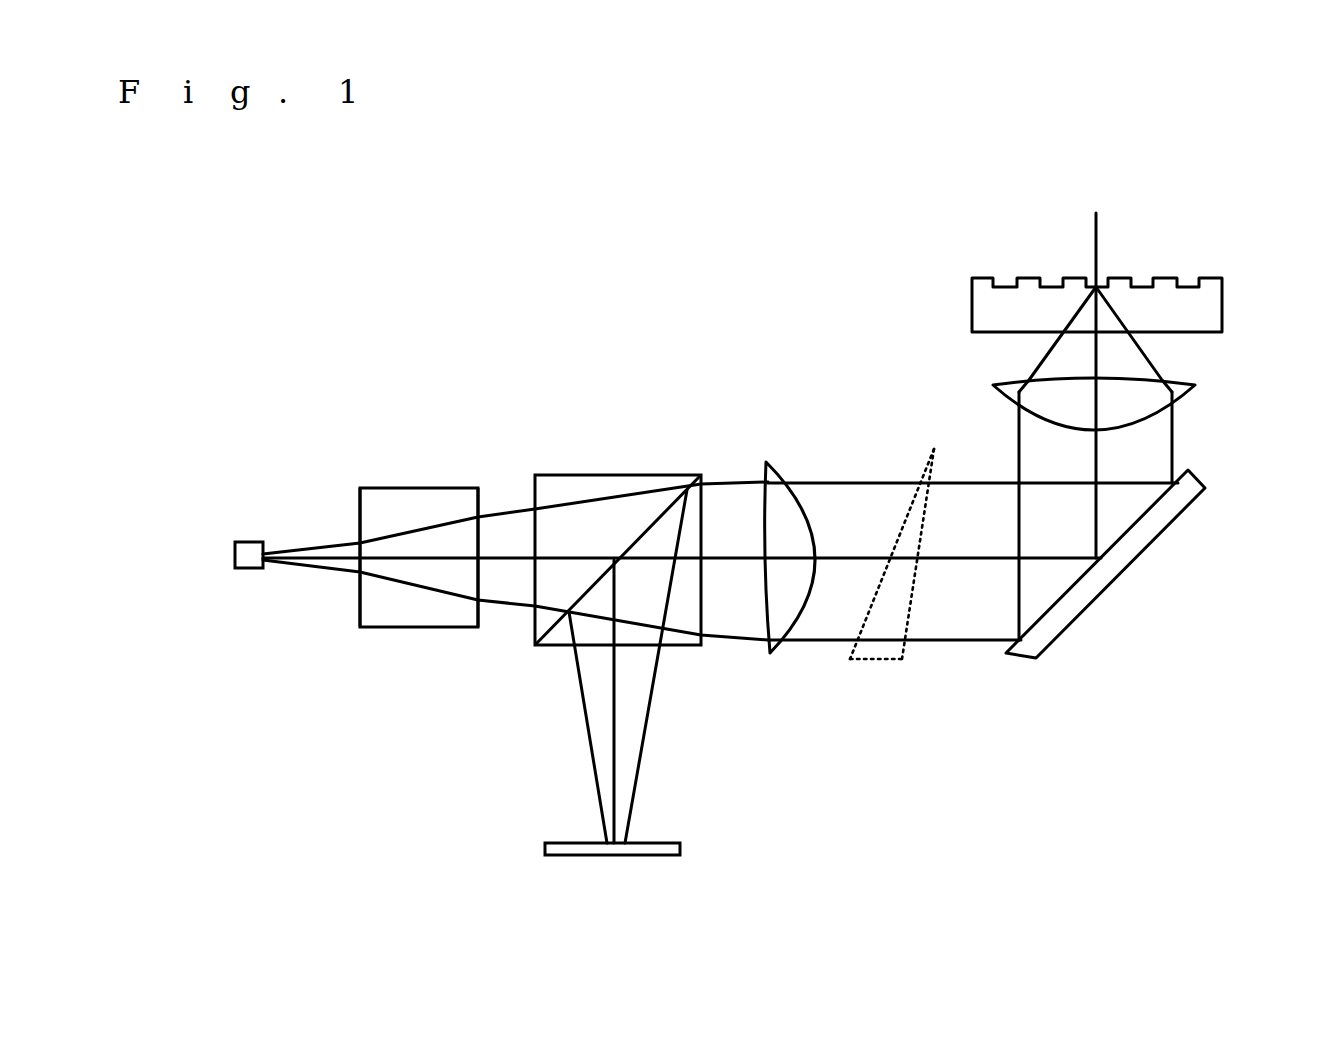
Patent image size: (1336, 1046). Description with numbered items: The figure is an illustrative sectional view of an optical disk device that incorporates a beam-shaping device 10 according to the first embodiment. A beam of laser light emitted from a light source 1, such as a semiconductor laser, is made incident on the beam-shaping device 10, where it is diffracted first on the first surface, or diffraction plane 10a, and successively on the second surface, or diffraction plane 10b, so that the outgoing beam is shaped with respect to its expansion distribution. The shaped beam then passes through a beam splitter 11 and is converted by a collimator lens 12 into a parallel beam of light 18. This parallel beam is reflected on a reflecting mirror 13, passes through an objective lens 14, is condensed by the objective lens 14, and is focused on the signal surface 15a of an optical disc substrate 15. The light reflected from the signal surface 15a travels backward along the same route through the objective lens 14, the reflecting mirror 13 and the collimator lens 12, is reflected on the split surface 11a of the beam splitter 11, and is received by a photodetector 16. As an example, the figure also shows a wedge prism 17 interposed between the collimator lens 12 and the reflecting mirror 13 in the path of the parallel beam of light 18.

The light source 1 is at (245, 563).
The beam-shaping device 10 is at (383, 620).
The first surface (diffraction plane) 10a is at (355, 512).
The second surface (diffraction plane) 10b is at (487, 490).
The beam splitter 11 is at (623, 485).
The split surface 11a is at (552, 648).
The collimator lens 12 is at (783, 472).
The reflecting mirror 13 is at (1190, 470).
The objective lens 14 is at (1195, 385).
The optical disc substrate 15 is at (1215, 303).
The signal surface 15a is at (1106, 274).
The photodetector 16 is at (663, 842).
The wedge prism 17 is at (875, 661).
The parallel beam of light 18 is at (872, 483).